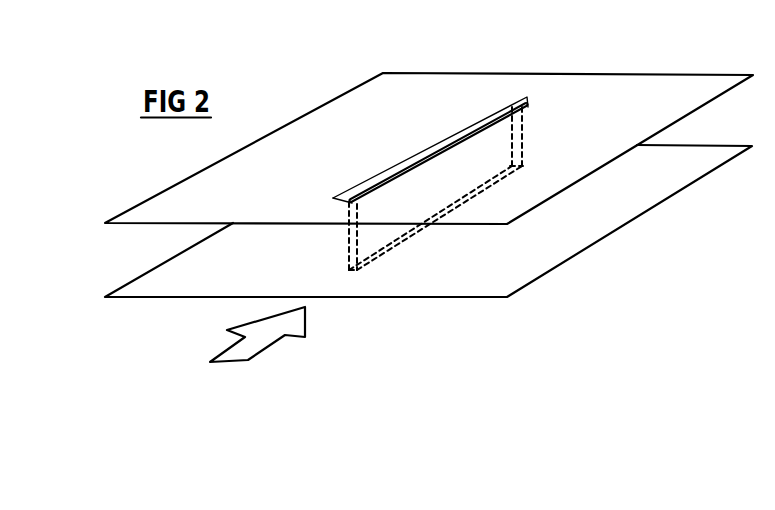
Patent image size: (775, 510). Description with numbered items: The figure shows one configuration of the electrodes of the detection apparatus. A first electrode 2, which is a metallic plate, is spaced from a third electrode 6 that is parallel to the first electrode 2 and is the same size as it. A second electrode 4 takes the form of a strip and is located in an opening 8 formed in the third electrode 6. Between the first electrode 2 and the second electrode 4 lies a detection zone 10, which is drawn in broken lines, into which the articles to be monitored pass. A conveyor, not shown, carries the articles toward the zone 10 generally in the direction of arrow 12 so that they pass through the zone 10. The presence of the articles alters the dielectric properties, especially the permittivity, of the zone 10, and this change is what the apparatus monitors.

The first electrode 2 is at (483, 288).
The second electrode 4 is at (517, 100).
The third electrode 6 is at (471, 218).
The opening 8 is at (530, 102).
The detection zone 10 is at (349, 272).
The arrow 12 is at (248, 337).